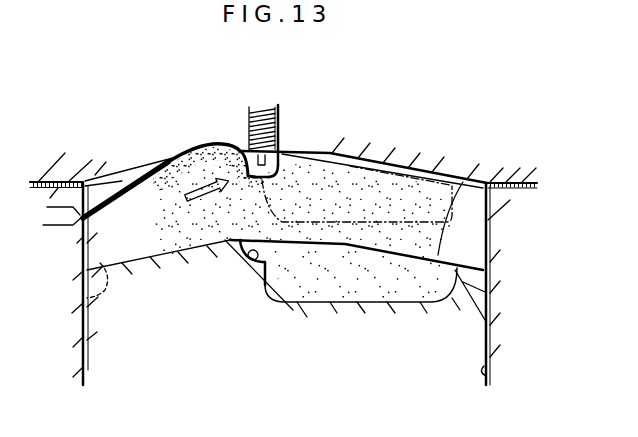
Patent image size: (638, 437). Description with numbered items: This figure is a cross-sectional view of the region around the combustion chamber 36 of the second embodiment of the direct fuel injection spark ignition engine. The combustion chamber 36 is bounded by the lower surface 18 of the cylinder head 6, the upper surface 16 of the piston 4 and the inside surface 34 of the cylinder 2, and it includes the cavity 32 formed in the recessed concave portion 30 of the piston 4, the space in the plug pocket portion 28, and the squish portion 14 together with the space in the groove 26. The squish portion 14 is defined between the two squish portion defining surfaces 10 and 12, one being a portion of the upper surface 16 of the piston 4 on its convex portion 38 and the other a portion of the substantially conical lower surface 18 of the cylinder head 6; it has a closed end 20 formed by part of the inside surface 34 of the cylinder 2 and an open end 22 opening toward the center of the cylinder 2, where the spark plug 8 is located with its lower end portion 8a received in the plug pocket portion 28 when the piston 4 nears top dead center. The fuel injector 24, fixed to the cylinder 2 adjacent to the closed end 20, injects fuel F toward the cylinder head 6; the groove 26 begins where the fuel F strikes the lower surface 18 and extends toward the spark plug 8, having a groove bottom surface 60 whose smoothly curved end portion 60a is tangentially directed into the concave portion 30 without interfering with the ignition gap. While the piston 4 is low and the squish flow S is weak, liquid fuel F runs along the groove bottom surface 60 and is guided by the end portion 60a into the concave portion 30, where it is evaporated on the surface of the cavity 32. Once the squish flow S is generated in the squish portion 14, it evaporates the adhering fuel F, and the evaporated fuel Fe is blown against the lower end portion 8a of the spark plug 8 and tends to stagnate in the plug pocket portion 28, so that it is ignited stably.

The cylinder 2 is at (493, 318).
The piston 4 is at (490, 266).
The cylinder head 6 is at (442, 168).
The spark plug 8 is at (262, 113).
The lower end portion of spark plug 8a is at (281, 132).
The squish portion defining surface 10 is at (132, 260).
The squish portion defining surface 12 is at (107, 200).
The squish portion 14 is at (121, 180).
The upper surface of piston 16 is at (463, 182).
The lower surface of cylinder head 18 is at (358, 161).
The closed end of squish portion 20 is at (82, 180).
The open end of squish portion 22 is at (240, 148).
The fuel injector 24 is at (55, 218).
The groove 26 is at (165, 162).
The plug pocket portion 28 is at (258, 263).
The recessed concave portion 30 is at (375, 303).
The cavity 32 is at (358, 288).
The inside surface of cylinder 34 is at (484, 368).
The combustion chamber 36 is at (407, 222).
The convex portion 38 is at (232, 246).
The groove bottom surface 60 is at (193, 151).
The end portion of groove bottom surface 60a is at (213, 142).
The fuel F is at (92, 186).
The squish flow S is at (184, 201).
The evaporated fuel Fe is at (342, 155).